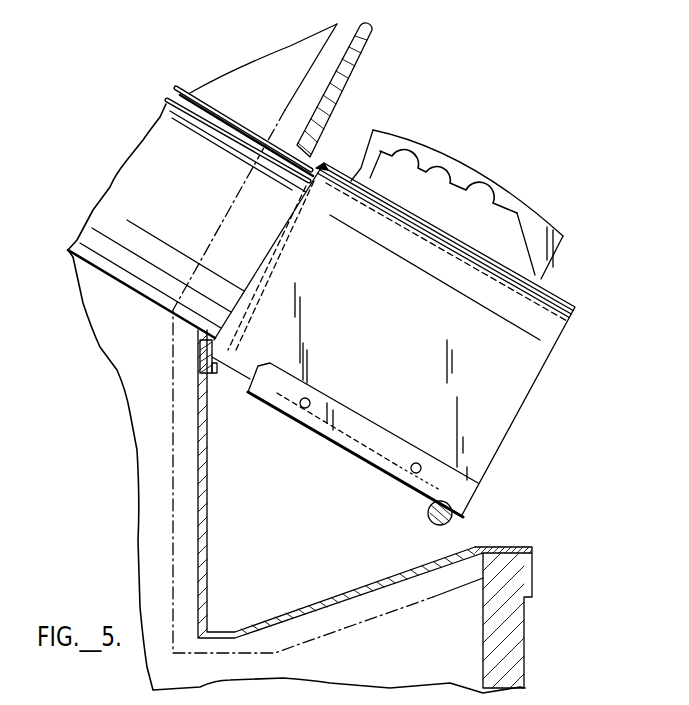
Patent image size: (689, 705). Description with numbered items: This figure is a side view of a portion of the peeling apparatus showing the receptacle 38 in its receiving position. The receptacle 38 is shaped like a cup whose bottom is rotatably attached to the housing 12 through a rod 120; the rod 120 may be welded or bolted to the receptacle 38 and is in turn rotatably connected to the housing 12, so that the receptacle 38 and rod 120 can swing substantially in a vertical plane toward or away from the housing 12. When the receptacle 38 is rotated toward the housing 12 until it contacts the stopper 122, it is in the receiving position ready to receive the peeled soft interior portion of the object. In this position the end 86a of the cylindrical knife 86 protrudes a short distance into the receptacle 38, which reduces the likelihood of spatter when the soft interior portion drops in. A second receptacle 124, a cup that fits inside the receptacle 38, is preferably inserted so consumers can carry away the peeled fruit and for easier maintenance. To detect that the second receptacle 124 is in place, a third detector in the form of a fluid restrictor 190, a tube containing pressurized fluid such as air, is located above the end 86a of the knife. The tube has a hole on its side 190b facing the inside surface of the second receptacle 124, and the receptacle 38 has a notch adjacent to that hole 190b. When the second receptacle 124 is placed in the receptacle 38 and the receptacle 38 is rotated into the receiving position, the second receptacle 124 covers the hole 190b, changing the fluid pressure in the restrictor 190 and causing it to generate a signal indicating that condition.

The housing 12 is at (370, 42).
The receptacle 38 is at (571, 296).
The cylindrical knife 86 is at (100, 281).
The end of the cylindrical knife 86a is at (321, 158).
The rod 120 is at (453, 521).
The stopper 122 is at (217, 373).
The second receptacle 124 is at (447, 157).
The fluid restrictor 190 is at (232, 100).
The hole on the side of the fluid restrictor 190b is at (318, 172).